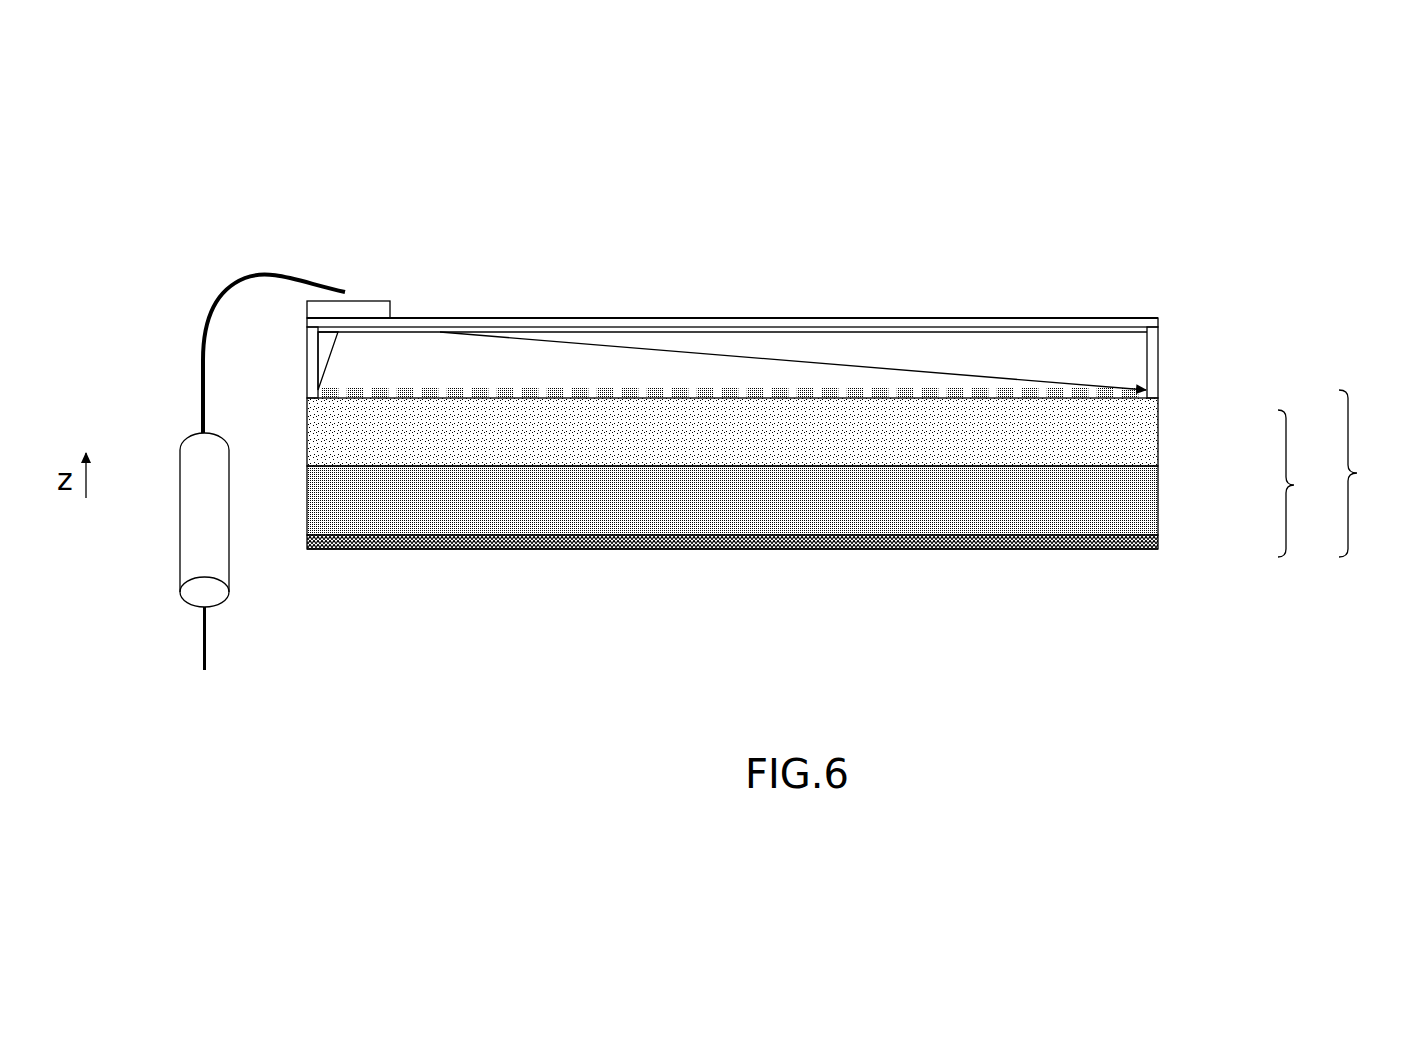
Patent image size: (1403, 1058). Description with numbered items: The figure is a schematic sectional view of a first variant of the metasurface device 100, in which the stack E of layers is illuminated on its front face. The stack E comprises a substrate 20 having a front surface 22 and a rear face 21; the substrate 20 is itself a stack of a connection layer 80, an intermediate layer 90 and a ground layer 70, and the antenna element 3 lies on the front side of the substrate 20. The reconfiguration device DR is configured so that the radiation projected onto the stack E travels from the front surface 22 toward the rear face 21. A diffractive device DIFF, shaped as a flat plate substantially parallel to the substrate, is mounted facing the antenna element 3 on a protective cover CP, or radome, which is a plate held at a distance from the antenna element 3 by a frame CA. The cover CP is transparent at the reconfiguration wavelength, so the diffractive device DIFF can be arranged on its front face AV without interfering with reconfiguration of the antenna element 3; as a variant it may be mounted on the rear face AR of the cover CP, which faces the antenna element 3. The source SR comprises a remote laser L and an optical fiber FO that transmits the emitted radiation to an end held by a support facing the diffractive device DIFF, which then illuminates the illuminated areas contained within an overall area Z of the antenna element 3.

The metasurface device 100 is at (270, 183).
The reconfiguration device DR is at (144, 256).
The source SR is at (171, 375).
The optical fiber FO is at (228, 282).
The remote laser L is at (180, 537).
The diffractive device DIFF is at (370, 300).
The protective cover CP is at (1160, 323).
The rear face of the cover AR is at (1066, 339).
The front face of the cover AV is at (641, 314).
The frame CA is at (307, 365).
The overall area Z is at (799, 351).
The antenna element 3 is at (1160, 397).
The front surface 22 is at (998, 390).
The connection layer 80 is at (1160, 430).
The intermediate layer 90 is at (1160, 495).
The ground layer 70 is at (1160, 538).
The rear face 21 is at (1030, 563).
The substrate 20 is at (1305, 483).
The stack E is at (1360, 473).